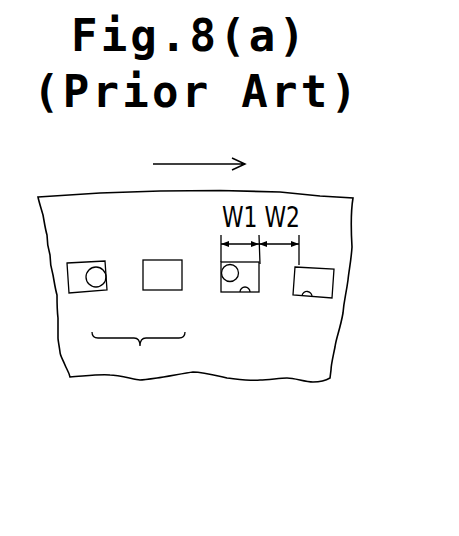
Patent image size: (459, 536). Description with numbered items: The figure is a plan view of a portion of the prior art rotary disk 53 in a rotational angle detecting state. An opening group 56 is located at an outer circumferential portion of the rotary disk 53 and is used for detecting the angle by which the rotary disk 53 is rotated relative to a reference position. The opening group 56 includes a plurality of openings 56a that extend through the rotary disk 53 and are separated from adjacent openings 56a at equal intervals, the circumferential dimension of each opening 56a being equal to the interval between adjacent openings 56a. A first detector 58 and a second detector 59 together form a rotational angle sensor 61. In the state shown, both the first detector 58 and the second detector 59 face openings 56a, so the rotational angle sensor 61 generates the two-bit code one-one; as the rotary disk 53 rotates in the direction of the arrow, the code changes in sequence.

The rotary disk 53 is at (321, 201).
The opening group 56 is at (318, 298).
The opening 56a is at (300, 296).
The first detector 58 is at (218, 277).
The second detector 59 is at (97, 280).
The rotational angle sensor 61 is at (140, 346).